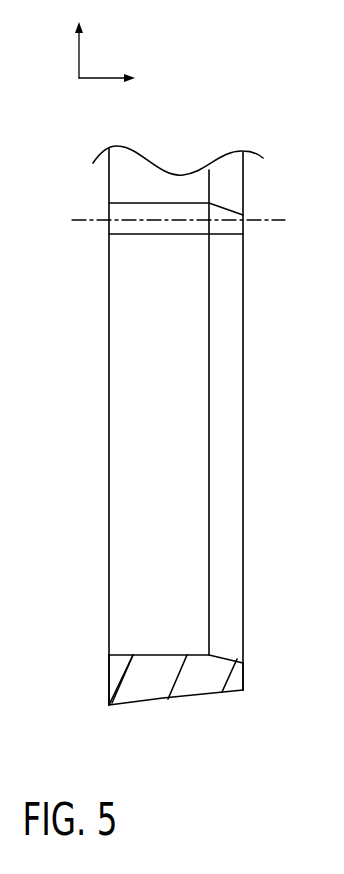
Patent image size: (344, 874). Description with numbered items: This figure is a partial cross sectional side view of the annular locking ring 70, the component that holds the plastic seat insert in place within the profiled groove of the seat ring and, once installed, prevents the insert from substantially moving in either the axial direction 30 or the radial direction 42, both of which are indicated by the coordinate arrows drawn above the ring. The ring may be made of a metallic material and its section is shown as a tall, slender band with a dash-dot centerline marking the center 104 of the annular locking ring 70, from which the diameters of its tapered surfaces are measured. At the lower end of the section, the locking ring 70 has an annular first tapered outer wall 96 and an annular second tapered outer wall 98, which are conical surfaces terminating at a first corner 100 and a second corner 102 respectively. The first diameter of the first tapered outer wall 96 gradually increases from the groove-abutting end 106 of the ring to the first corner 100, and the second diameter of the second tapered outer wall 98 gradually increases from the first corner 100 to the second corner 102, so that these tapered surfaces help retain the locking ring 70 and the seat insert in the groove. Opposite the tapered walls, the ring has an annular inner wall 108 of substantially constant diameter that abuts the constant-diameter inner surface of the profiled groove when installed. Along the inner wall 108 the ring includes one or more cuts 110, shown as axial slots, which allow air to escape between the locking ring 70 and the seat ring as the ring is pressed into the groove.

The axial direction 30 is at (103, 79).
The radial direction 42 is at (78, 56).
The locking ring 70 is at (229, 108).
The first tapered outer wall 96 is at (203, 697).
The second tapered outer wall 98 is at (125, 706).
The first corner 100 is at (163, 699).
The second corner 102 is at (108, 705).
The center 104 is at (91, 220).
The groove-abutting end 106 is at (243, 676).
The inner wall 108 is at (160, 653).
The cuts 110 is at (160, 235).